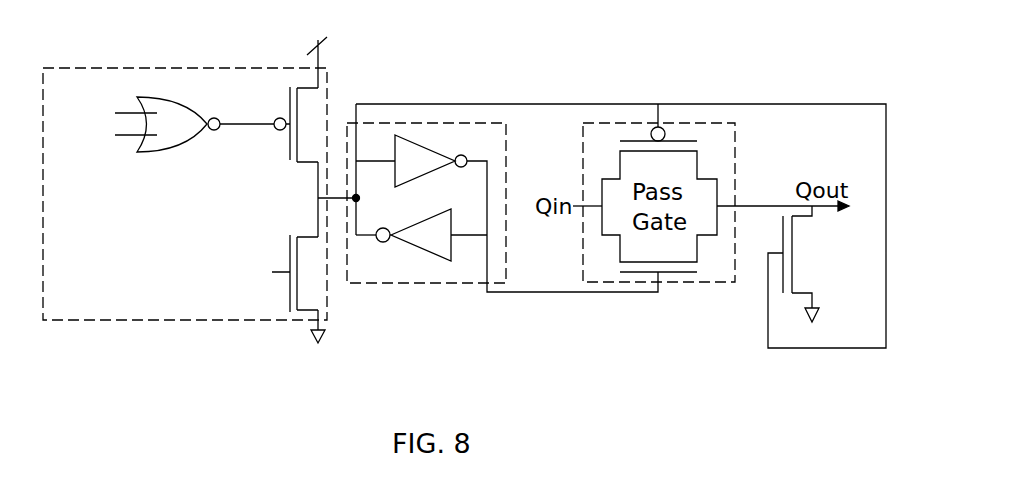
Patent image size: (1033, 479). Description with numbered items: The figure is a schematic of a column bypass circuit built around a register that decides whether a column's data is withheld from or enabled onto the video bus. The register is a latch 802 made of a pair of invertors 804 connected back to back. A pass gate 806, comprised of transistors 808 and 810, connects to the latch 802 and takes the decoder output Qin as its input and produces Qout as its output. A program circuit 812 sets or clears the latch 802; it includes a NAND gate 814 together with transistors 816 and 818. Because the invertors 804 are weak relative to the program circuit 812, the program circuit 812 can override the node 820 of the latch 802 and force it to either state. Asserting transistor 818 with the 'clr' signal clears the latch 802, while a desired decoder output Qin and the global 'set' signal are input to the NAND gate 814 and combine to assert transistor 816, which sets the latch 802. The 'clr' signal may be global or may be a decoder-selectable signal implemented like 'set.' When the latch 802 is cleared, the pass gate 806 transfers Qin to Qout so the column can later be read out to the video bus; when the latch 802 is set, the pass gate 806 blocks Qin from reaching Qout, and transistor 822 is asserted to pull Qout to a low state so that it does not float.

The latch 802 is at (430, 123).
The invertors 804 is at (421, 217).
The pass gate 806 is at (736, 165).
The transistor 808 is at (678, 141).
The transistor 810 is at (678, 274).
The program circuit 812 is at (117, 321).
The NAND gate 814 is at (173, 150).
The transistor 816 is at (285, 143).
The transistor 818 is at (289, 252).
The node 820 is at (356, 198).
The transistor 822 is at (792, 270).